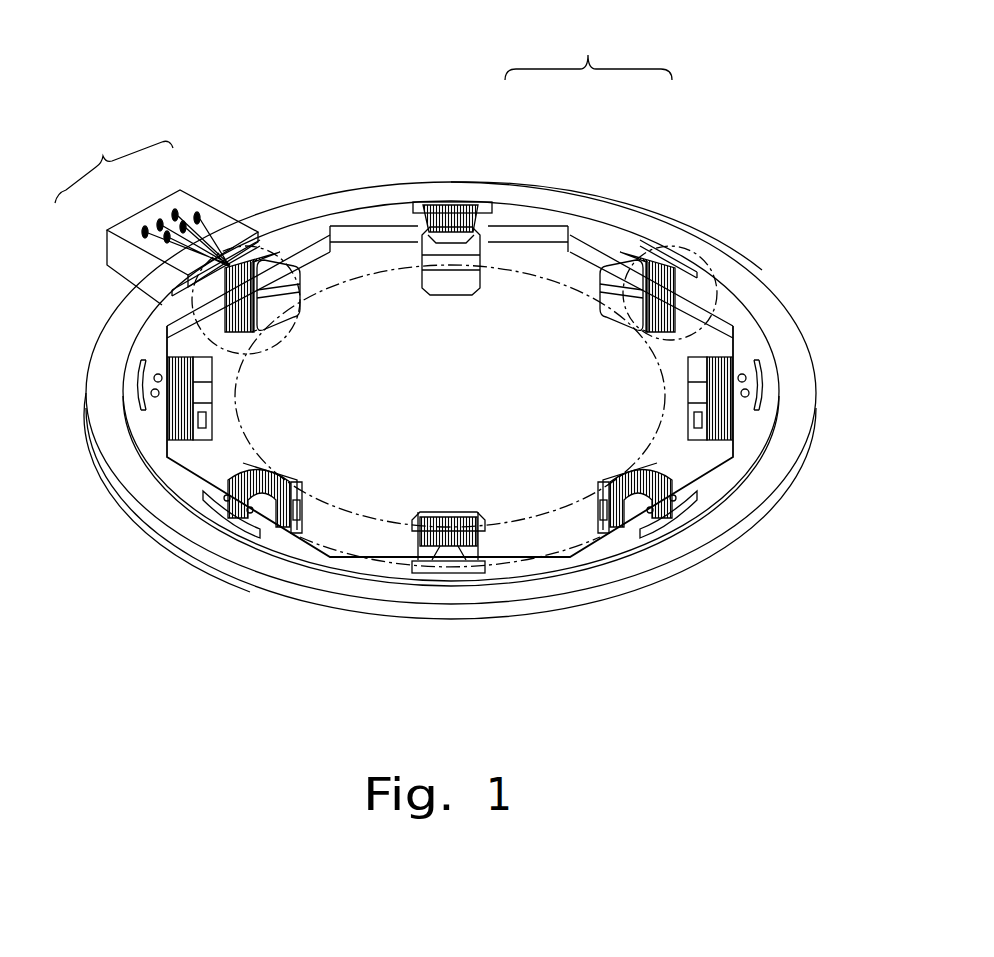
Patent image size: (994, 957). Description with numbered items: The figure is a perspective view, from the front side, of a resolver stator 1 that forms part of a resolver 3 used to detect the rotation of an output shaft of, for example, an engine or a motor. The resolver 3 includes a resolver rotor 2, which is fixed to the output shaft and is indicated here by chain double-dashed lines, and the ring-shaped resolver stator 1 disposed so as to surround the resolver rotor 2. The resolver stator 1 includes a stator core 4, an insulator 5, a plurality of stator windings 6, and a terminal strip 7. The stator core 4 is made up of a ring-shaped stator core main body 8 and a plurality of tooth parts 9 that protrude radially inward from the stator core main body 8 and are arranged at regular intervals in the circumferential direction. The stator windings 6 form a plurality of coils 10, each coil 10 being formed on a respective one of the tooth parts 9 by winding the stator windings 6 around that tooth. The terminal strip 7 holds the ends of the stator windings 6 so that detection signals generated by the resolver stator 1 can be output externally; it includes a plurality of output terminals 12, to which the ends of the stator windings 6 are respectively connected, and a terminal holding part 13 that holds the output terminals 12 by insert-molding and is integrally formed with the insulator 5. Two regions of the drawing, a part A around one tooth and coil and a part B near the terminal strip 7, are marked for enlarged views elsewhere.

The resolver stator 1 is at (622, 197).
The resolver rotor 2 is at (508, 268).
The resolver 3 is at (588, 45).
The stator core 4 is at (524, 611).
The insulator 5 is at (387, 560).
The stator windings 6 is at (182, 223).
The terminal strip 7 is at (156, 218).
The stator core main body 8 is at (309, 601).
The tooth parts 9 is at (290, 300).
The coils 10 is at (237, 322).
The output terminals 12 is at (173, 210).
The terminal holding part 13 is at (107, 233).
The part A is at (700, 258).
The part B is at (246, 246).